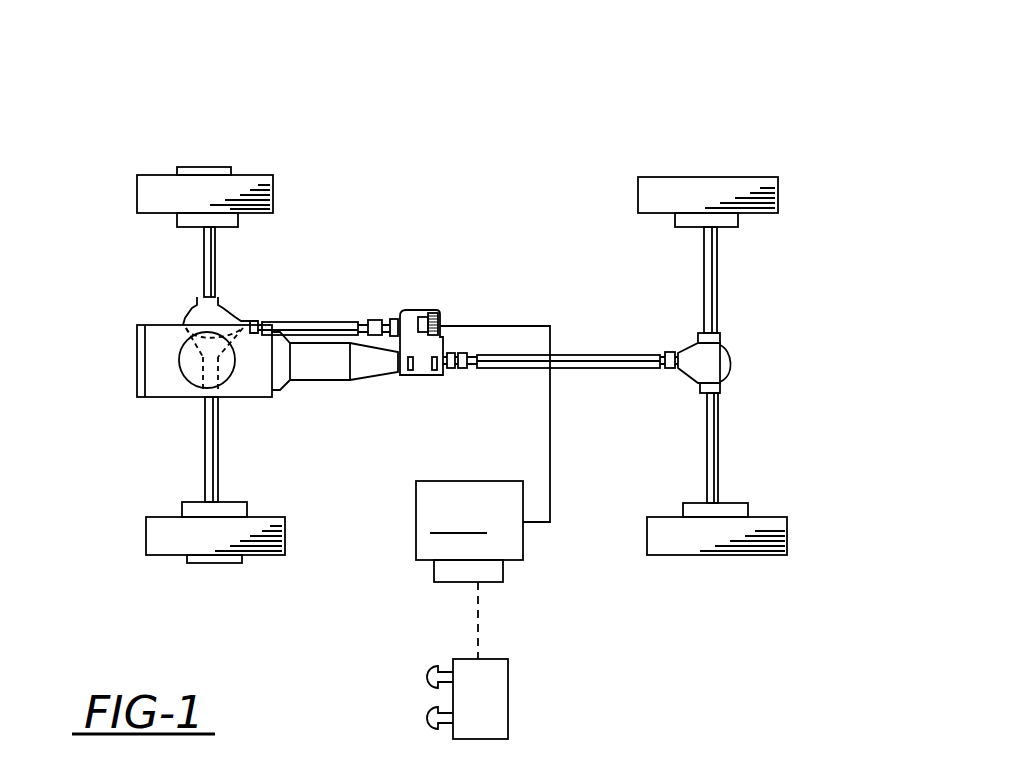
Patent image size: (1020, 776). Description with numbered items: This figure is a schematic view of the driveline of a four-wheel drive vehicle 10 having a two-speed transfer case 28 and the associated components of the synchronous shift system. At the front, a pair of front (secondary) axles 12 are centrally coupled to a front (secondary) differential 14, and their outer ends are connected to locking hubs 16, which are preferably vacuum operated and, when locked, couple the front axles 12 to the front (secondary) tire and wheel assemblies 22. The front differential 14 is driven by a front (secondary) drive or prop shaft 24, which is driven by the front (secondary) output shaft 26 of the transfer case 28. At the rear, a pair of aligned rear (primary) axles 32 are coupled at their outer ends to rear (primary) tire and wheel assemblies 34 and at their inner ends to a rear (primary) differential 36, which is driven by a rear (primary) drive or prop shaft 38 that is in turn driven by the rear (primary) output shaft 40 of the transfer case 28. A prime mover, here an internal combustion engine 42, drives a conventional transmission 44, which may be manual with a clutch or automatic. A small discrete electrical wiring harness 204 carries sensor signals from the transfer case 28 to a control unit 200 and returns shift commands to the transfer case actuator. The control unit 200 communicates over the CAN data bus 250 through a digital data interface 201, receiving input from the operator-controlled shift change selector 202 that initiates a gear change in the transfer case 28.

The vehicle 10 is at (610, 115).
The front (secondary) axles 12 is at (205, 255).
The front (secondary) differential 14 is at (197, 316).
The locking hubs 16 is at (205, 167).
The front (secondary) tire and wheel assemblies 22 is at (250, 182).
The front (secondary) drive or prop shaft 24 is at (298, 330).
The front (secondary) output shaft 26 is at (393, 320).
The transfer case 28 is at (432, 314).
The rear (primary) axles 32 is at (717, 268).
The rear (primary) tire and wheel assemblies 34 is at (735, 186).
The rear (primary) differential 36 is at (712, 340).
The rear (primary) drive or prop shaft 38 is at (600, 355).
The rear (primary) output shaft 40 is at (447, 368).
The internal combustion engine 42 is at (153, 358).
The transmission 44 is at (312, 372).
The control unit 200 is at (469, 520).
The digital data interface 201 is at (433, 568).
The operator-controlled shift change selector 202 is at (498, 722).
The electrical wiring harness 204 is at (550, 458).
The CAN data bus 250 is at (480, 628).